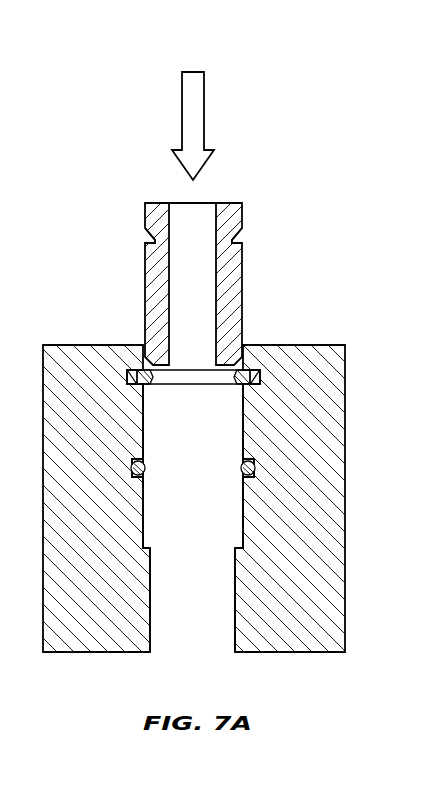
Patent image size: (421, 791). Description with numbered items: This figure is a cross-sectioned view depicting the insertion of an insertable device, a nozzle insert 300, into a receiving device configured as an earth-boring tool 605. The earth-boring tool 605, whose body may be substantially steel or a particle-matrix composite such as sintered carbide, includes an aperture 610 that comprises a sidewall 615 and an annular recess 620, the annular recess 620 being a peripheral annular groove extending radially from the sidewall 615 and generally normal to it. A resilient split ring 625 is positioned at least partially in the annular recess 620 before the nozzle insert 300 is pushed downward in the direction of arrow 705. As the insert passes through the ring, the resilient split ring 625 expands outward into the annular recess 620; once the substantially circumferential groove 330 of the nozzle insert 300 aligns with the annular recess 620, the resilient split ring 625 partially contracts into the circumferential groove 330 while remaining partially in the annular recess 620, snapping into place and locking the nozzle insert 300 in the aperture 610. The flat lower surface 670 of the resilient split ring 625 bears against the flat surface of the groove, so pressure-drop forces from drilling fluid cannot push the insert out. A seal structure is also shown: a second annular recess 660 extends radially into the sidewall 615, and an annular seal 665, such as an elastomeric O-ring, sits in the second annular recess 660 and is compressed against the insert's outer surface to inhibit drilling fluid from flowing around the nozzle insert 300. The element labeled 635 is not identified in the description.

The arrow 705 is at (203, 118).
The nozzle insert 300 is at (243, 213).
The circumferential groove 330 is at (250, 238).
The earth-boring tool 605 is at (313, 508).
The aperture 610 is at (207, 645).
The sidewall 615 is at (243, 440).
The annular recess 620 is at (253, 377).
The resilient split ring 625 is at (150, 389).
The flat lower surface 670 is at (238, 389).
The shoulder at cavity bottom 635 is at (150, 538).
The second annular recess 660 is at (243, 477).
The annular seal 665 is at (146, 471).